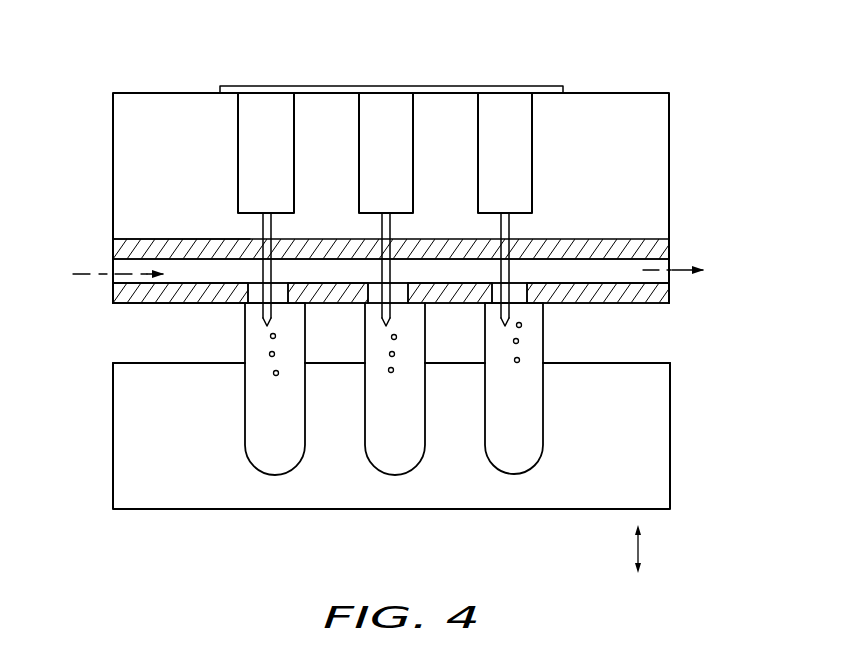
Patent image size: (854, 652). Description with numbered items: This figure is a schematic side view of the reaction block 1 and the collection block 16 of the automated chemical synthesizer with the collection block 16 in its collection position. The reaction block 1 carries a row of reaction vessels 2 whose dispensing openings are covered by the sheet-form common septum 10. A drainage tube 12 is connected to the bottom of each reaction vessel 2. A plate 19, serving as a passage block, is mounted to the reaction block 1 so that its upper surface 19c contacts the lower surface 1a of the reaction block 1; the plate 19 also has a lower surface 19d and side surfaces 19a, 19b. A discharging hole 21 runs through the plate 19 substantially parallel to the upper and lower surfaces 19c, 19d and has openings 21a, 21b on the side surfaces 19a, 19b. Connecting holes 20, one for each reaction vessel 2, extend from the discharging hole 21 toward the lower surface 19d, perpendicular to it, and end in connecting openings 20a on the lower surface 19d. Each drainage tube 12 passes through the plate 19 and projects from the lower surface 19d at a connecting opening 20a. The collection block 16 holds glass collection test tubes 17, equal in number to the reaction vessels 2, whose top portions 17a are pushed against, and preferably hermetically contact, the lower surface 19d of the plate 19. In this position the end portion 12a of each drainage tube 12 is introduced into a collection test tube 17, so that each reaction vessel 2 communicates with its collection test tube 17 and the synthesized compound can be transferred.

The reaction block 1 is at (680, 179).
The lower surface of the reaction block 1a is at (650, 240).
The reaction vessels 2 is at (238, 135).
The common septum 10 is at (496, 86).
The drainage tubes 12 is at (263, 270).
The end portion of the drainage tube 12a is at (263, 328).
The collection block 16 is at (682, 436).
The collection test tubes 17 is at (545, 420).
The top portions of the collection test tubes 17a is at (246, 303).
The plate (passage block) 19 is at (655, 326).
The side surface of the plate 19a is at (113, 298).
The side surface of the plate 19b is at (670, 295).
The upper surface of the plate 19c is at (140, 239).
The lower surface of the plate 19d is at (148, 303).
The connecting holes 20 is at (528, 287).
The connecting openings 20a is at (288, 304).
The discharging holes 21 is at (324, 272).
The opening of the discharging hole 21a is at (113, 265).
The opening of the discharging hole 21b is at (672, 281).